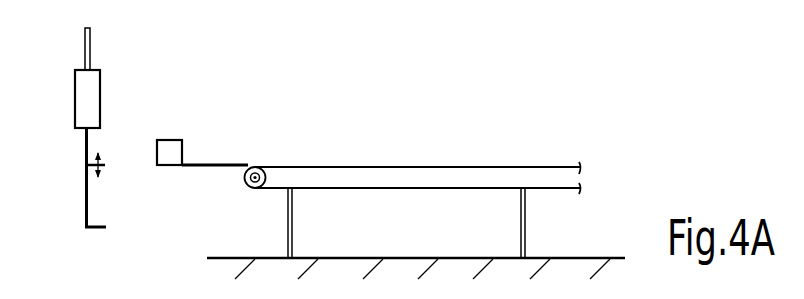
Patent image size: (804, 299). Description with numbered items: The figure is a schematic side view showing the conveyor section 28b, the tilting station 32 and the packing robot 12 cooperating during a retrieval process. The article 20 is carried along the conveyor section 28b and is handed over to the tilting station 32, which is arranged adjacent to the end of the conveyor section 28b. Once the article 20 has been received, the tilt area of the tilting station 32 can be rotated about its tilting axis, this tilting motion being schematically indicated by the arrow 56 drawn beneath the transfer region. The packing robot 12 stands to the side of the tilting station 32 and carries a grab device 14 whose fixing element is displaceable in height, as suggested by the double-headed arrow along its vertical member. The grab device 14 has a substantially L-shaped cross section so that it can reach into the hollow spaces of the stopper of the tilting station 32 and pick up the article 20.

The packing robot 12 is at (68, 97).
The grab device 14 is at (68, 198).
The article 20 is at (168, 140).
The tilting station 32 is at (235, 125).
The arrow 56 is at (190, 173).
The conveyor section 28b is at (513, 166).